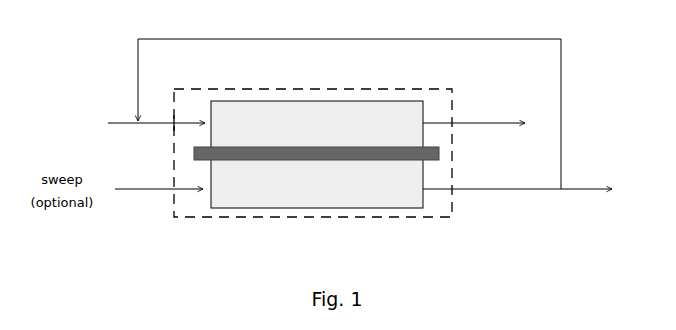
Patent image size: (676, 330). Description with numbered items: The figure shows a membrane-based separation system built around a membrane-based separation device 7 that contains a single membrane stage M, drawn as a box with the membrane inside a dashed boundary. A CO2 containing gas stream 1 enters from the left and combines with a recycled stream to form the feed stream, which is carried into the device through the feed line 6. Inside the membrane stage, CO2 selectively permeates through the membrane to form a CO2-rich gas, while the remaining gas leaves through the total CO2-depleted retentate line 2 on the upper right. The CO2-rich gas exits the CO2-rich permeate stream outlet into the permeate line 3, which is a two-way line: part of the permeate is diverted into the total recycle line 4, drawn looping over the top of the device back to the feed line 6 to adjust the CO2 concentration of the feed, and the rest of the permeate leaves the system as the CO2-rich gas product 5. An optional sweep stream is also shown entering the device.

The CO2 containing gas stream 1 is at (149, 123).
The total CO2-depleted retentate line 2 is at (474, 112).
The permeate line 3 is at (492, 177).
The total recycle line 4 is at (349, 101).
The CO2-rich gas product 5 is at (595, 189).
The feed line 6 is at (183, 123).
The membrane-based separation device 7 is at (304, 218).